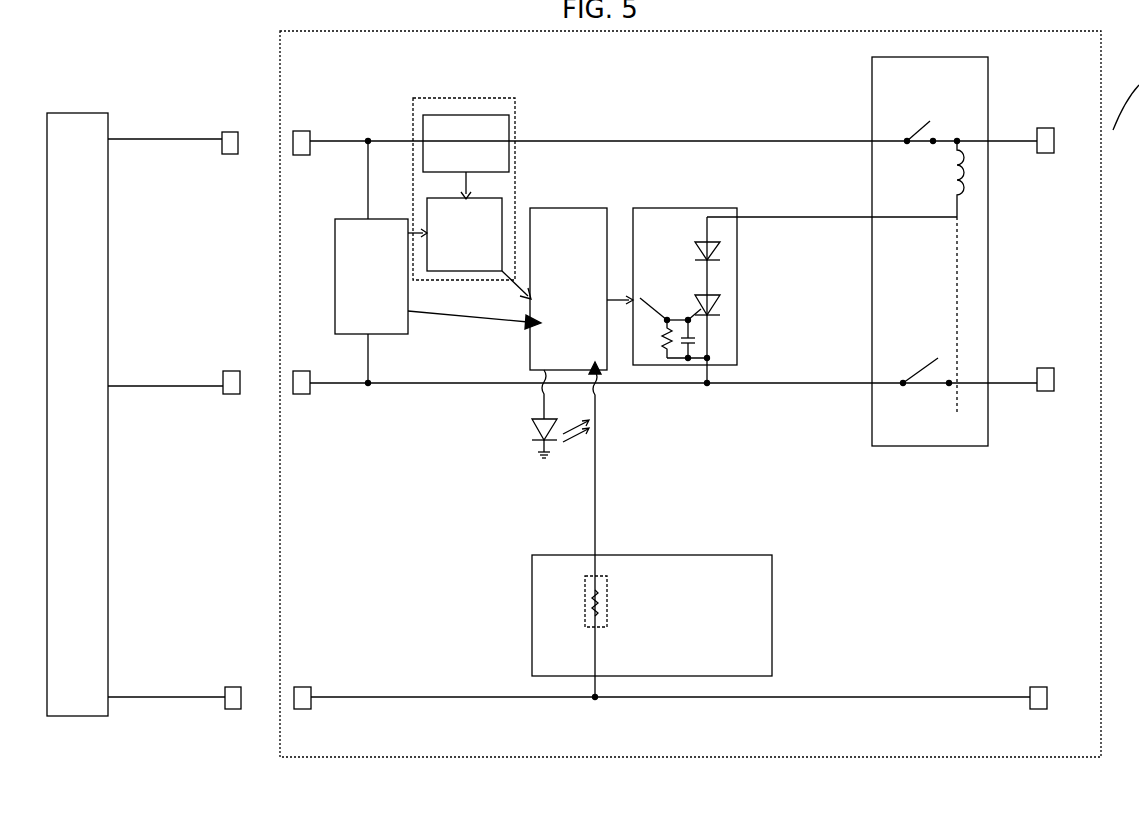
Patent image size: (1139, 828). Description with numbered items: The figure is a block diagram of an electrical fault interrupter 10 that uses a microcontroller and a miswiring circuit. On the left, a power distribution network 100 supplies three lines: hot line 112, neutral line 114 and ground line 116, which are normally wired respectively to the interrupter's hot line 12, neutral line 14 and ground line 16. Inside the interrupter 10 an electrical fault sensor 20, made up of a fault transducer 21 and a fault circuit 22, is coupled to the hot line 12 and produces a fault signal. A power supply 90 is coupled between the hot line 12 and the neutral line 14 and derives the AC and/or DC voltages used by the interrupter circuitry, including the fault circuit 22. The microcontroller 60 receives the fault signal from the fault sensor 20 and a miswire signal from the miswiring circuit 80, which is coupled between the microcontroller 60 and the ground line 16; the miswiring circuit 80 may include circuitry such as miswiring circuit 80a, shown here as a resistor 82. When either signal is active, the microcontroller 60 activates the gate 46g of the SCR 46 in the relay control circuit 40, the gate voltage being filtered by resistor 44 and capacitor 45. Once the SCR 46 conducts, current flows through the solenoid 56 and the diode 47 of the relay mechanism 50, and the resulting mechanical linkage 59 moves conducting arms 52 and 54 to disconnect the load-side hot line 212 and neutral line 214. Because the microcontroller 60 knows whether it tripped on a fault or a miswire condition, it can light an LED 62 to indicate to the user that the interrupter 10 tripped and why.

The electrical fault interrupter device 10 is at (430, 757).
The hot line 12 is at (393, 139).
The neutral line 14 is at (401, 379).
The ground line 16 is at (352, 695).
The electrical fault sensor 20 is at (467, 97).
The fault transducer 21 is at (466, 157).
The fault circuit 22 is at (479, 248).
The relay control circuit 40 is at (795, 297).
The resistor 44 is at (667, 350).
The capacitor 45 is at (695, 343).
The SCR 46 is at (720, 305).
The gate 46g is at (700, 313).
The diode 47 is at (720, 252).
The relay mechanism 50 is at (930, 251).
The conducting arm 52 is at (929, 123).
The conducting arm 54 is at (922, 365).
The solenoid 56 is at (960, 178).
The mechanical linkage 59 is at (960, 246).
The microcontroller 60 is at (581, 289).
The LED 62 is at (535, 430).
The miswiring circuit 80 is at (652, 529).
The miswiring circuit 80a is at (607, 598).
The resistor 82 is at (585, 600).
The power supply 90 is at (438, 262).
The power distribution network 100 is at (77, 414).
The hot line 112 is at (135, 137).
The neutral line 114 is at (138, 385).
The ground line 116 is at (138, 696).
The hot line 212 is at (1010, 140).
The neutral line 214 is at (1012, 385).